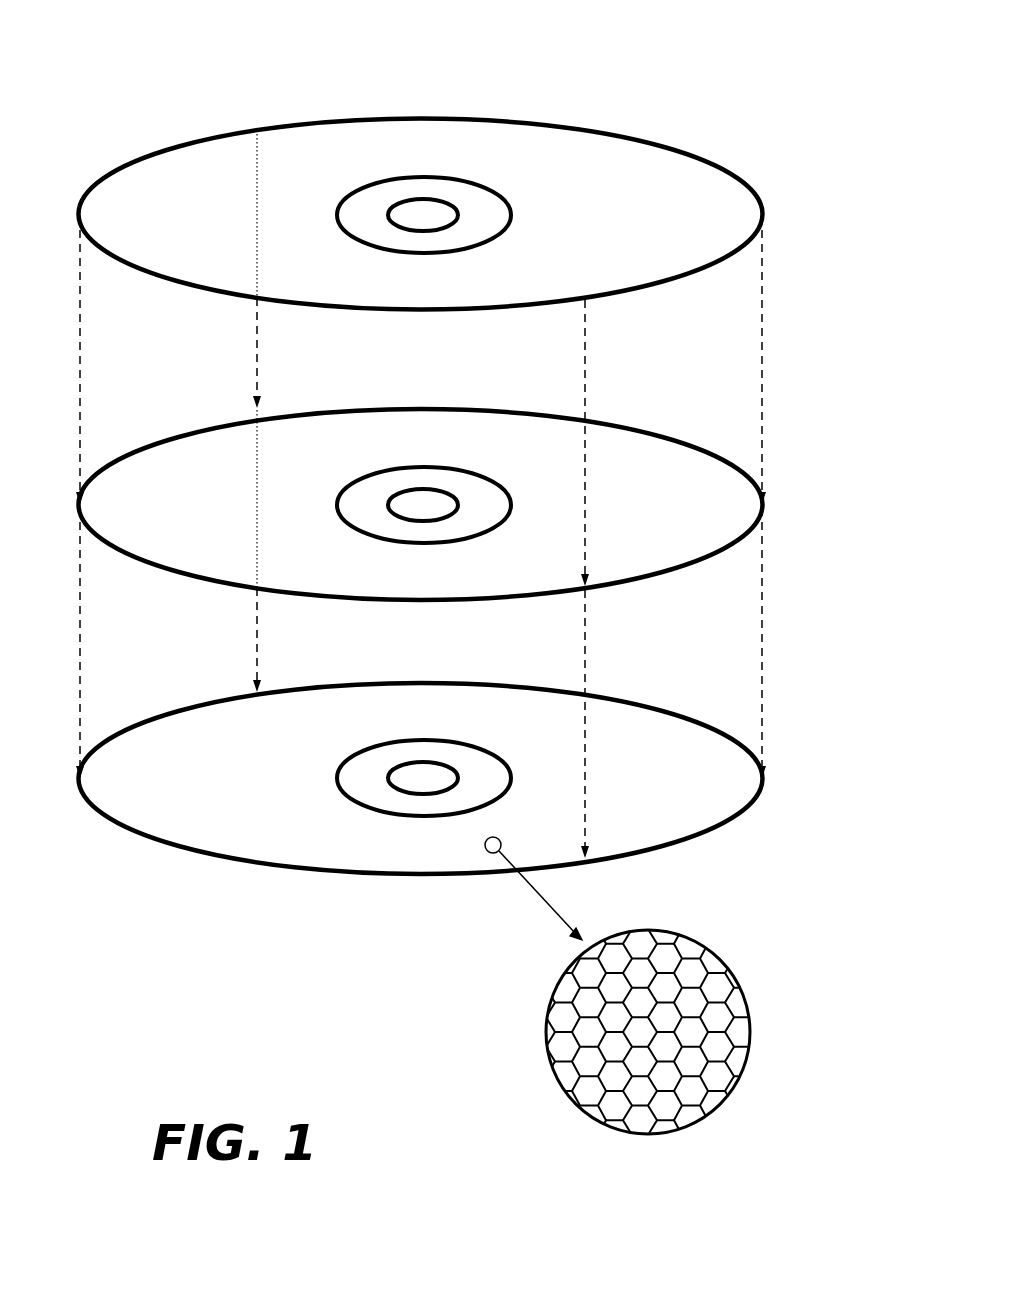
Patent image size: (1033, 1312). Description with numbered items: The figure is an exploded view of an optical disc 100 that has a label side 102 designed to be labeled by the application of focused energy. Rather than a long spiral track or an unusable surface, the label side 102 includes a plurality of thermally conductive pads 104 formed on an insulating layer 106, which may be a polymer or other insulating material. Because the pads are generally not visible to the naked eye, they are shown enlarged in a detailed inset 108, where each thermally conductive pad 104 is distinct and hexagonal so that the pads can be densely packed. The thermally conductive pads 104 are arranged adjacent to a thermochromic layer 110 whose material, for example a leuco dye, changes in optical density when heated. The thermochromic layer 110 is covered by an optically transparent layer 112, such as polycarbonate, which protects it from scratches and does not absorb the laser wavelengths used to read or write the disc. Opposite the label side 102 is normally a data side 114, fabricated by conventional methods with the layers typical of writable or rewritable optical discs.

The optical disc 100 is at (820, 238).
The label side 102 is at (399, 84).
The thermally conductive pads 104 is at (743, 1027).
The insulating layer 106 is at (607, 858).
The detailed inset 108 is at (693, 938).
The thermochromic layer 110 is at (635, 582).
The optically transparent layer 112 is at (627, 292).
The data side 114 is at (421, 896).